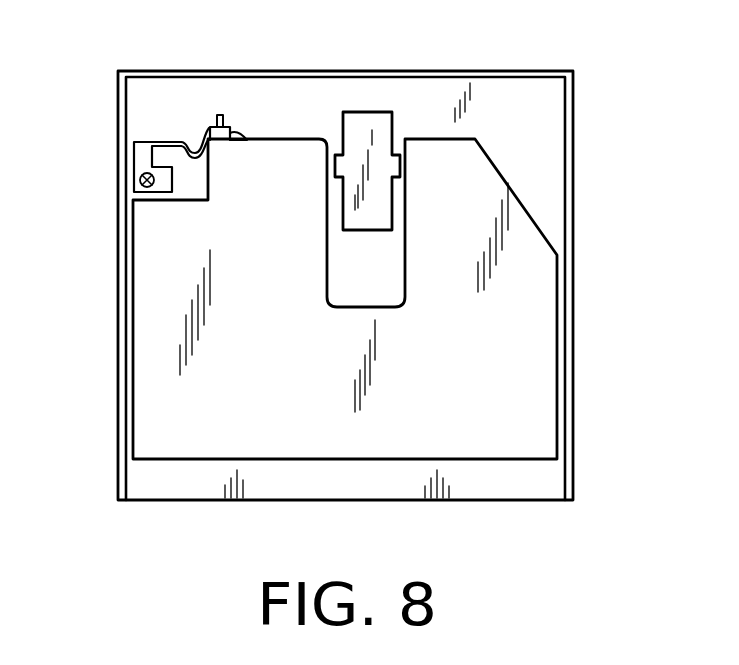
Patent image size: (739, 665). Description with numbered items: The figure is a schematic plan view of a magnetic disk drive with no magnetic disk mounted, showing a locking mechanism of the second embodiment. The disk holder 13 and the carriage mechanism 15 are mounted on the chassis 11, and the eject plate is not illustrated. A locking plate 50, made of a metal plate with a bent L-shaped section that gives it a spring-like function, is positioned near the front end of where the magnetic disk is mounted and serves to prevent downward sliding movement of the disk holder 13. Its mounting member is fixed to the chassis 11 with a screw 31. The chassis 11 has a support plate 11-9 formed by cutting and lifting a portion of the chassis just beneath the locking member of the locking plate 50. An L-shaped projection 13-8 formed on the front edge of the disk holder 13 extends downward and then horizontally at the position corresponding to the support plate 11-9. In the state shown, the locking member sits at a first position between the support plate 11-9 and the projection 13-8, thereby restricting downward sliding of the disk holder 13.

The chassis 11 is at (548, 172).
The disk holder 13 is at (537, 311).
The carriage mechanism 15 is at (369, 118).
The locking plate 50 is at (173, 134).
The screw 31 is at (141, 181).
The L-shaped projection 13-8 is at (236, 128).
The support plate 11-9 is at (219, 115).